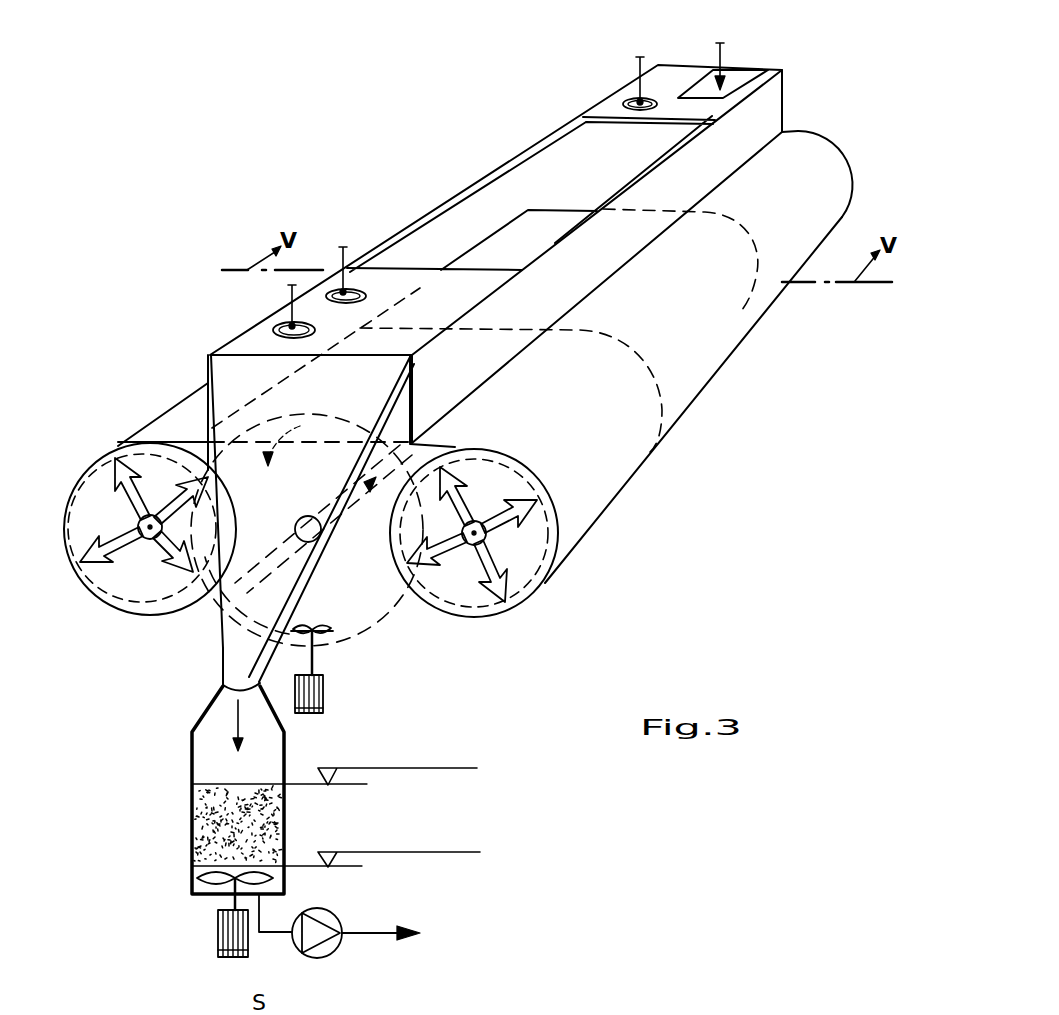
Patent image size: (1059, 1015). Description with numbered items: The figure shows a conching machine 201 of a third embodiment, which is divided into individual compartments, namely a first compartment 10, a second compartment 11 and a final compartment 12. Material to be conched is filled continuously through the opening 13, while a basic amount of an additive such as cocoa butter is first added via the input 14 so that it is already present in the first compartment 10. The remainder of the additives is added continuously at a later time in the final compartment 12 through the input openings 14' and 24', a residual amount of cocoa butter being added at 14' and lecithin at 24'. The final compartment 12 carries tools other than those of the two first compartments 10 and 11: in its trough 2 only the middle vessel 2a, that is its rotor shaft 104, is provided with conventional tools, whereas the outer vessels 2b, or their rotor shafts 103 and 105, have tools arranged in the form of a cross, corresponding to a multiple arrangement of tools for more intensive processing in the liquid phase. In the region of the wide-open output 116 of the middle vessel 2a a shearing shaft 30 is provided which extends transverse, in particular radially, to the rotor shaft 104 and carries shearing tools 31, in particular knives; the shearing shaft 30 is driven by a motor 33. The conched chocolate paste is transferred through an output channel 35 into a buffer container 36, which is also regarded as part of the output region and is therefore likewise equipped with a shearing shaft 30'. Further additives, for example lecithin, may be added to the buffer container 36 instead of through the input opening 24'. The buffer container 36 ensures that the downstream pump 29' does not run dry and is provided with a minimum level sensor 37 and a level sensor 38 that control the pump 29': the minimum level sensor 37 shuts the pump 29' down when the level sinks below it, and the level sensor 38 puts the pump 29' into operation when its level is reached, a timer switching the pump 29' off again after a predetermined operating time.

The trough 2 is at (362, 667).
The middle vessel 2a is at (412, 620).
The outer vessels 2b is at (123, 614).
The first compartment 10 is at (788, 256).
The second compartment 11 is at (700, 353).
The final compartment 12 is at (634, 422).
The opening 13 is at (722, 52).
The input 14 is at (611, 80).
The input opening 14' is at (271, 311).
The input opening 24' is at (358, 243).
The pump 29' is at (339, 954).
The shearing shaft 30 is at (339, 679).
The shearing shaft 30' is at (214, 928).
The shearing tools 31 is at (313, 625).
The motor 33 is at (298, 688).
The output channel 35 is at (228, 647).
The buffer container 36 is at (191, 803).
The minimum level sensor 37 is at (417, 858).
The level sensor 38 is at (410, 777).
The rotor shaft 103 is at (145, 523).
The rotor shaft 104 is at (300, 522).
The rotor shaft 105 is at (471, 528).
The output 116 is at (244, 379).
The conching machine 201 is at (618, 528).